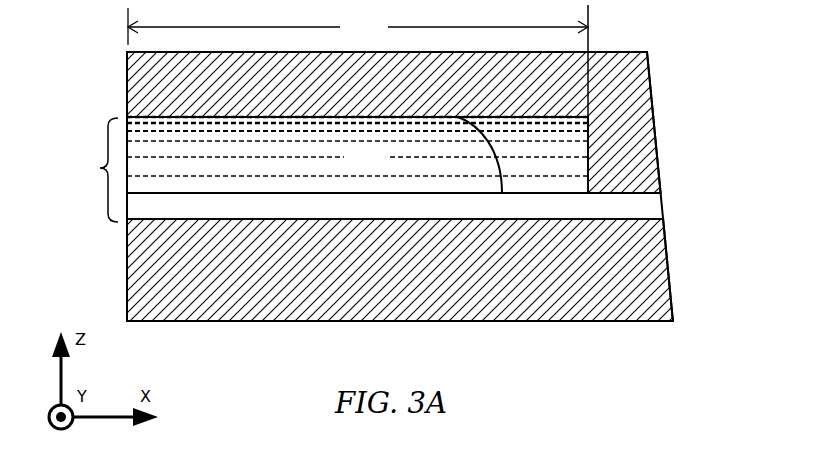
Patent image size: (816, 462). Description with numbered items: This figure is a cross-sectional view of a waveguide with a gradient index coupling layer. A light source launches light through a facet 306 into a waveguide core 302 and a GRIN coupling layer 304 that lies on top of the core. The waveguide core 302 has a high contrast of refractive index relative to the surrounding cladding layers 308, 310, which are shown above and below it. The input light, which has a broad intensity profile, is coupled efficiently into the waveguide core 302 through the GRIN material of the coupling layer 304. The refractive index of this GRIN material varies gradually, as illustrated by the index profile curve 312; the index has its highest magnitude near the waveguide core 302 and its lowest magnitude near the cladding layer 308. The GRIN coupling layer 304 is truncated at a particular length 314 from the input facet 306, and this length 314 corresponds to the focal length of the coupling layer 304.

The waveguide core 302 is at (653, 212).
The GRIN coupling layer 304 is at (384, 166).
The facet 306 is at (88, 170).
The cladding layer 308 is at (428, 91).
The cladding layer 310 is at (409, 291).
The index profile curve 312 is at (503, 186).
The length 314 is at (358, 26).